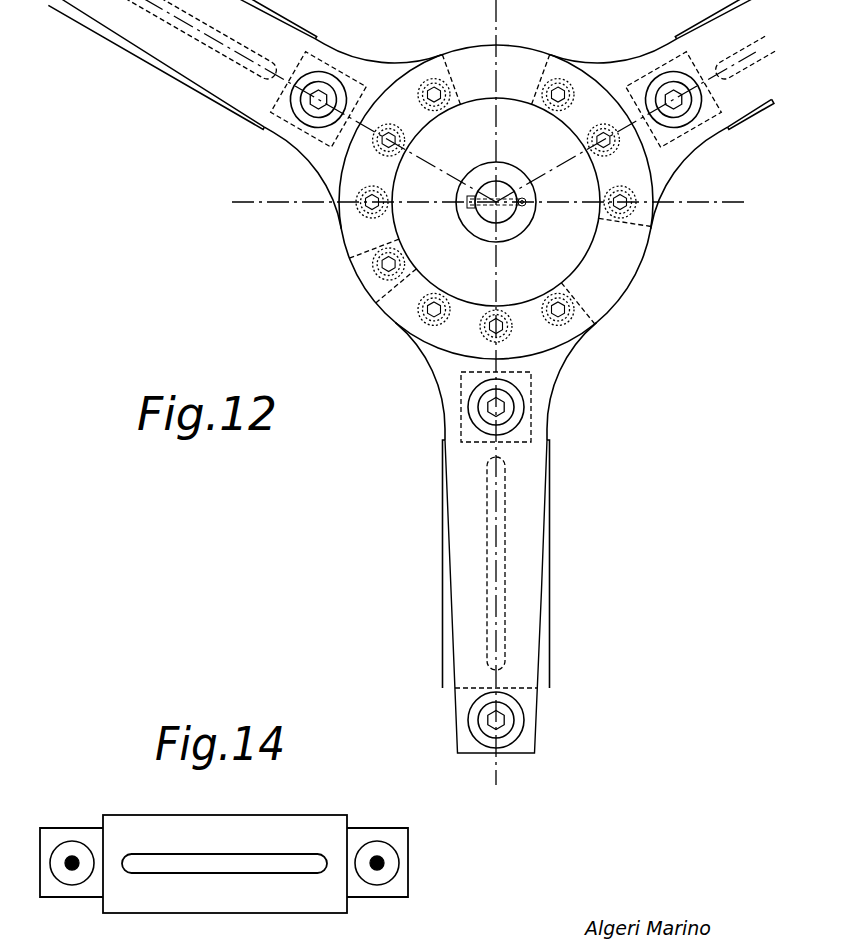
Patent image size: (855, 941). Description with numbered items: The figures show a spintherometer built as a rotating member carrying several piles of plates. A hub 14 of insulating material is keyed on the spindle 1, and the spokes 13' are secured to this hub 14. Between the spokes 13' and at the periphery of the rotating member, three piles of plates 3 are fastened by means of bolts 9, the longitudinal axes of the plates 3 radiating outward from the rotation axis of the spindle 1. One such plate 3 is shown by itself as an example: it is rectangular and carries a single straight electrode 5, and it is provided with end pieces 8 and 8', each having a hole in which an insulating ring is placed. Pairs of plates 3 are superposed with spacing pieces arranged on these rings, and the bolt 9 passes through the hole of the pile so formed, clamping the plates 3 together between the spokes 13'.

In FIG. 12, the spindle 1 is at (503, 215).
In FIG. 12, the plates 3 is at (547, 567).
In FIG. 14, the plates 3 is at (128, 825).
In FIG. 14, the straight electrode 5 is at (307, 860).
In FIG. 14, the end piece 8 is at (71, 837).
In FIG. 12, the end piece 8' is at (479, 671).
In FIG. 14, the end piece 8' is at (377, 837).
In FIG. 12, the bolt 9 is at (502, 408).
In FIG. 12, the spokes 13' is at (464, 407).
In FIG. 12, the hub 14 is at (402, 220).